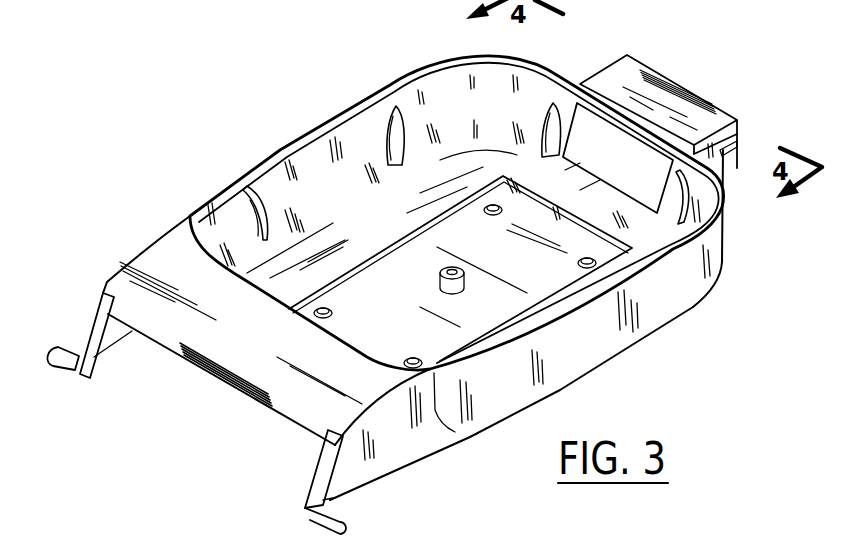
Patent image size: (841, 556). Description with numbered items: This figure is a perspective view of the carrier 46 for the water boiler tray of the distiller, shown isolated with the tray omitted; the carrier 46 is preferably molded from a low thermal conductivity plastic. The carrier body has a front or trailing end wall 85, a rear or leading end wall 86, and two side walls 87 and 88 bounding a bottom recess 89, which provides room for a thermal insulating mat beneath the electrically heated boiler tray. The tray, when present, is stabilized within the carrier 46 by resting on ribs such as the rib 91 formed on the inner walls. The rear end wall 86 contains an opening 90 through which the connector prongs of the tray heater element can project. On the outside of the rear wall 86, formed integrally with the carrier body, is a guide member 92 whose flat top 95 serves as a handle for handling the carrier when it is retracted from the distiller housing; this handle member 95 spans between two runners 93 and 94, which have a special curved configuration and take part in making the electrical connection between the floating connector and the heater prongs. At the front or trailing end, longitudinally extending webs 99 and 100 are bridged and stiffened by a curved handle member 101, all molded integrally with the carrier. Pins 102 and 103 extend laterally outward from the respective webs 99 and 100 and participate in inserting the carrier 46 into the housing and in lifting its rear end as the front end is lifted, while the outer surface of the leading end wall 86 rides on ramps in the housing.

The carrier 46 is at (379, 79).
The front or trailing end wall 85 is at (370, 355).
The rear or leading end wall 86 is at (548, 94).
The side wall 87 is at (313, 150).
The side wall 88 is at (643, 257).
The bottom recess 89 is at (410, 268).
The opening 90 is at (637, 180).
The rib 91 is at (245, 190).
The guide member 92 is at (700, 70).
The runner 93 is at (622, 140).
The runner 94 is at (729, 172).
The flat top / handle member 95 is at (710, 123).
The web 99 is at (131, 337).
The web 100 is at (408, 448).
The handle member 101 is at (290, 407).
The pin 102 is at (57, 364).
The pin 103 is at (348, 528).